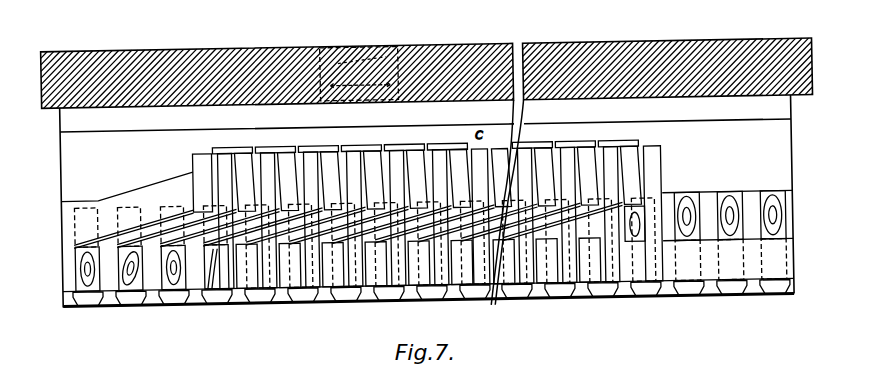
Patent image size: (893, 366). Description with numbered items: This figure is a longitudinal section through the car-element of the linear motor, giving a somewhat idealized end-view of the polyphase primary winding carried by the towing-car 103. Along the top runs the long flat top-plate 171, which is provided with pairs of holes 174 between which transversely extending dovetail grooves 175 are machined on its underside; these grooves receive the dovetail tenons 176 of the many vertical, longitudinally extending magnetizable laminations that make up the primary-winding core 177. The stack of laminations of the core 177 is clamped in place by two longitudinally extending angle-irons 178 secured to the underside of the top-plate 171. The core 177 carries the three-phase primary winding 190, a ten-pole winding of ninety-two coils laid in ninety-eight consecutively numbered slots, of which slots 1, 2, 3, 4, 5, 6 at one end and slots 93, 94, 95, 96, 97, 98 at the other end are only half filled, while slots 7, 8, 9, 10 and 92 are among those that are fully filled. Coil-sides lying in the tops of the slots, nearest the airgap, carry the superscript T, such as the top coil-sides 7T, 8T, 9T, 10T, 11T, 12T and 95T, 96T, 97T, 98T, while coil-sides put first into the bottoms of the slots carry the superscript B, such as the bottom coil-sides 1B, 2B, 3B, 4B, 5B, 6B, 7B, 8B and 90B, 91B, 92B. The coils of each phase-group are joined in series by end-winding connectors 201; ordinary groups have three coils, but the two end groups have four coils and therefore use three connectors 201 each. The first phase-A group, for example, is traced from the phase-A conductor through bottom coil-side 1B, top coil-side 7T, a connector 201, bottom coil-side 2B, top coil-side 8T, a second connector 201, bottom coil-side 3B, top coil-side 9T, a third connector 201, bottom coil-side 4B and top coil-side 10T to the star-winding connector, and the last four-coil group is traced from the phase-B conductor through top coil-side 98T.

The towing-car 103 is at (785, 28).
The top-plate 171 is at (621, 53).
The pairs of holes 174 is at (340, 47).
The dovetail grooves 175 is at (398, 47).
The dovetail tenons 176 is at (361, 99).
The primary-winding core 177 is at (787, 235).
The angle-irons 178 is at (786, 117).
The three-phase primary winding 190 is at (163, 169).
The end-winding connector 201 is at (225, 146).
The slot 1 is at (87, 266).
The slot 2 is at (130, 265).
The slot 3 is at (173, 264).
The slot 4 is at (216, 264).
The slot 5 is at (255, 263).
The slot 6 is at (298, 262).
The slot 7 is at (341, 261).
The slot 8 is at (384, 260).
The slot 9 is at (427, 260).
The slot 10 is at (470, 259).
The slot 92 is at (512, 258).
The slot 93 is at (555, 257).
The slot 94 is at (598, 257).
The slot 95 is at (642, 256).
The slot 96 is at (688, 253).
The slot 97 is at (731, 252).
The slot 98 is at (774, 251).
The bottom coil-side 1B is at (145, 181).
The bottom coil-side 2B is at (133, 246).
The bottom coil-side 3B is at (186, 256).
The bottom coil-side 4B is at (330, 181).
The bottom coil-side 5B is at (373, 180).
The bottom coil-side 6B is at (416, 179).
The bottom coil-side 7B is at (459, 178).
The bottom coil-side 8B is at (501, 166).
The top coil-side 7T is at (332, 311).
The top coil-side 8T is at (373, 311).
The top coil-side 9T is at (319, 217).
The top coil-side 10T is at (363, 209).
The top coil-side 11T is at (405, 215).
The top coil-side 12T is at (448, 214).
The bottom coil-side 90B is at (549, 162).
The bottom coil-side 91B is at (597, 165).
The bottom coil-side 92B is at (636, 165).
The top coil-side 95T is at (527, 162).
The top coil-side 96T is at (569, 162).
The top coil-side 97T is at (611, 162).
The top coil-side 98T is at (667, 179).